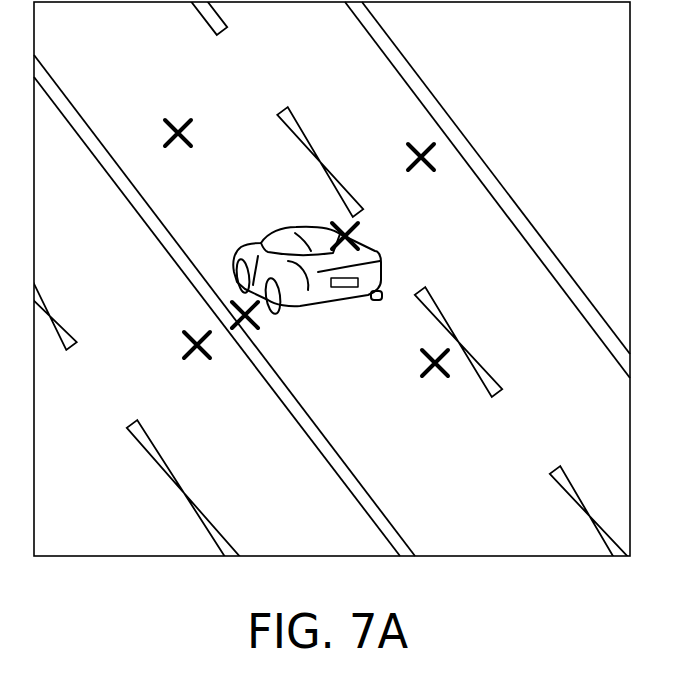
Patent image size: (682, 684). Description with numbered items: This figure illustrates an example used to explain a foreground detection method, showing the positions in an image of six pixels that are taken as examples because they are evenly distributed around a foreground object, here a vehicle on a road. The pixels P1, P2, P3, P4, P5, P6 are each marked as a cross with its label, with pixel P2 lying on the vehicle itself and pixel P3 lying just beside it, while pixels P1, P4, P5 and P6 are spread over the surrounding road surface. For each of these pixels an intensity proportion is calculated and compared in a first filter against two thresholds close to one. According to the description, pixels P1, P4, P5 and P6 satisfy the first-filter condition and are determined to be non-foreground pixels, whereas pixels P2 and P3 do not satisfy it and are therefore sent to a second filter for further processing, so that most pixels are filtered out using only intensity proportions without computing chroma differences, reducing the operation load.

The pixel P1 is at (208, 360).
The pixel P2 is at (340, 222).
The pixel P3 is at (256, 330).
The pixel P4 is at (447, 379).
The pixel P5 is at (190, 149).
The pixel P6 is at (432, 172).